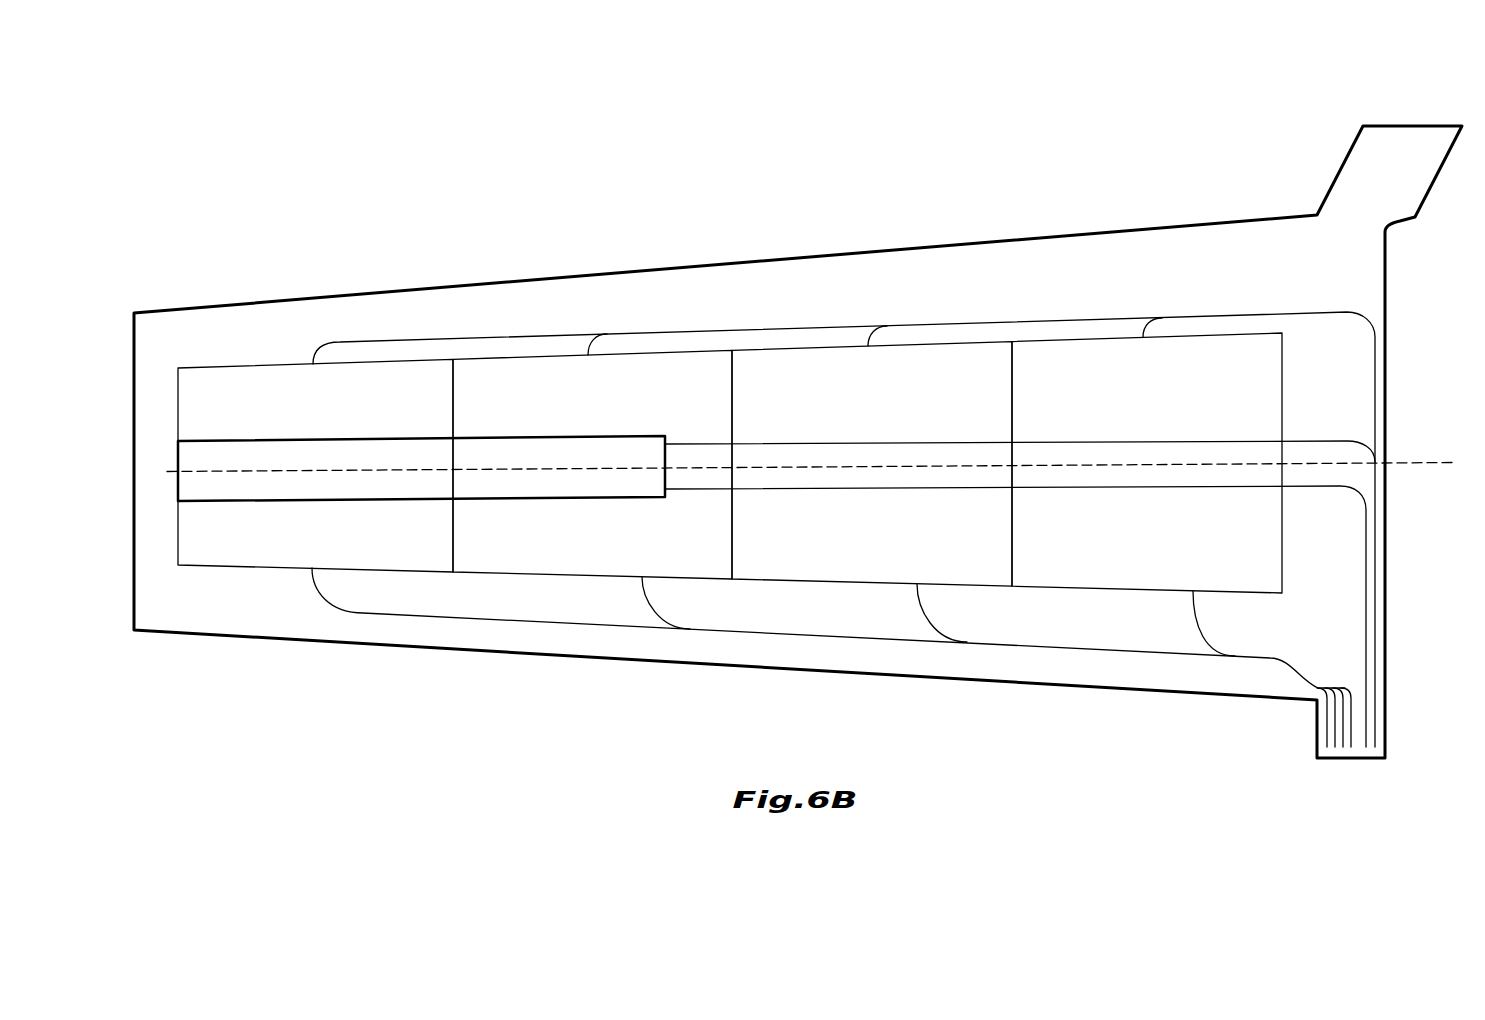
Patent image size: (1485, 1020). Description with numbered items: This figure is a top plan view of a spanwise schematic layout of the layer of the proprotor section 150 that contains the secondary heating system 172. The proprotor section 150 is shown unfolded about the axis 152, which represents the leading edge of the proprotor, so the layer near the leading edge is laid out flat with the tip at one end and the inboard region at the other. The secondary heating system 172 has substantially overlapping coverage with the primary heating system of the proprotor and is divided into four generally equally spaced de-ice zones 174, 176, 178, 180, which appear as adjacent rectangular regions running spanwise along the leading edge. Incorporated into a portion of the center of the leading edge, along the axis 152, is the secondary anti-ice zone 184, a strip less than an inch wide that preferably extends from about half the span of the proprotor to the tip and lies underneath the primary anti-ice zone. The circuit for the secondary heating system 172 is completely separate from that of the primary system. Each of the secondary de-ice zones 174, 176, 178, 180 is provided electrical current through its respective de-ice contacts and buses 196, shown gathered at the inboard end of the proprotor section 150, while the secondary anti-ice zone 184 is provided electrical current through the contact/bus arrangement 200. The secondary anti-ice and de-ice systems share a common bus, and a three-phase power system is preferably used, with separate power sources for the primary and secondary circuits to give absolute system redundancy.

The proprotor section 150 is at (1033, 212).
The axis 152 is at (1406, 463).
The secondary heating system 172 is at (730, 548).
The secondary de-ice zone 174 is at (227, 553).
The secondary de-ice zone 176 is at (548, 562).
The secondary de-ice zone 178 is at (818, 572).
The secondary de-ice zone 180 is at (1035, 577).
The secondary anti-ice zone 184 is at (268, 452).
The de-ice contacts and buses 196 is at (1326, 764).
The contact/bus arrangement 200 is at (1372, 752).